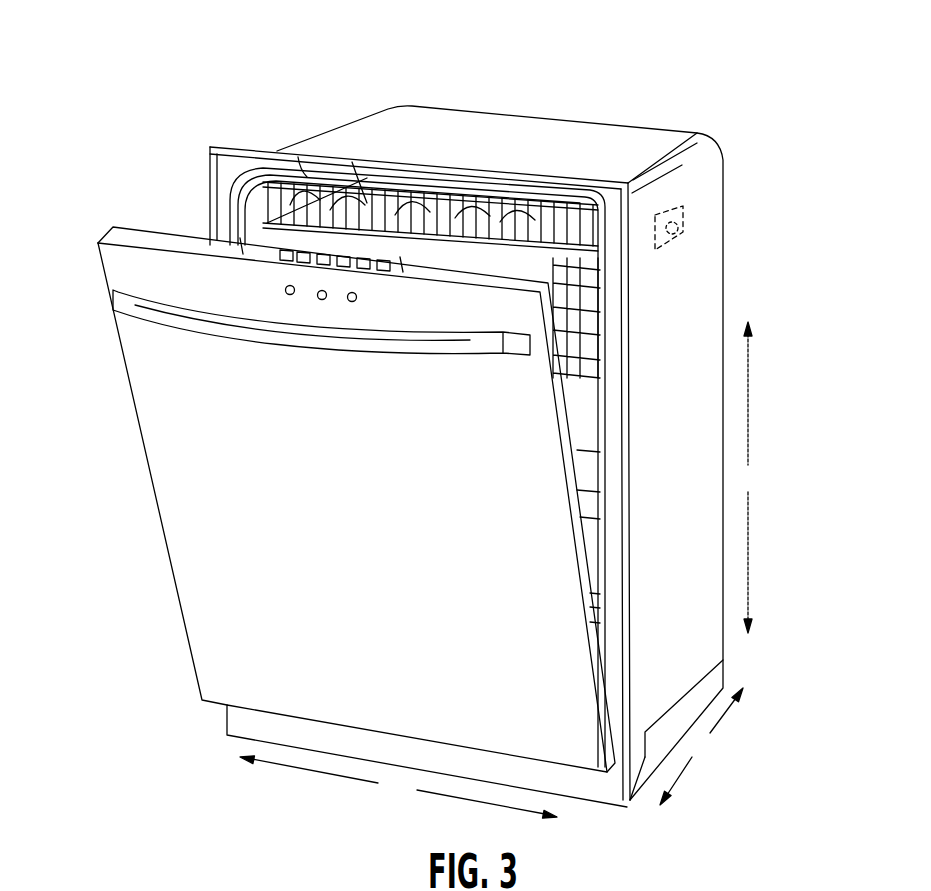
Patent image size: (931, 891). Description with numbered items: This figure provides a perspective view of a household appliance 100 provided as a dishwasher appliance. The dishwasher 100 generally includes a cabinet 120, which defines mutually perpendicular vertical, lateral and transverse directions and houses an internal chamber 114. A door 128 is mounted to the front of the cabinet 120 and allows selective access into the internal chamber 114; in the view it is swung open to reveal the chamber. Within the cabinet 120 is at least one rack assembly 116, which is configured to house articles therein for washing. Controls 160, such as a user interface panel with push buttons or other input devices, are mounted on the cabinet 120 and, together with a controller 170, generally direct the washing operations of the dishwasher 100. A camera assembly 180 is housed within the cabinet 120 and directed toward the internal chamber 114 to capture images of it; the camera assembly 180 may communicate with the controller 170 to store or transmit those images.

The household appliance 100 is at (435, 414).
The internal chamber 114 is at (500, 213).
The rack assembly 116 is at (600, 350).
The cabinet 120 is at (500, 453).
The door 128 is at (346, 486).
The controls 160 is at (317, 267).
The controller 170 is at (166, 236).
The camera assembly 180 is at (687, 227).